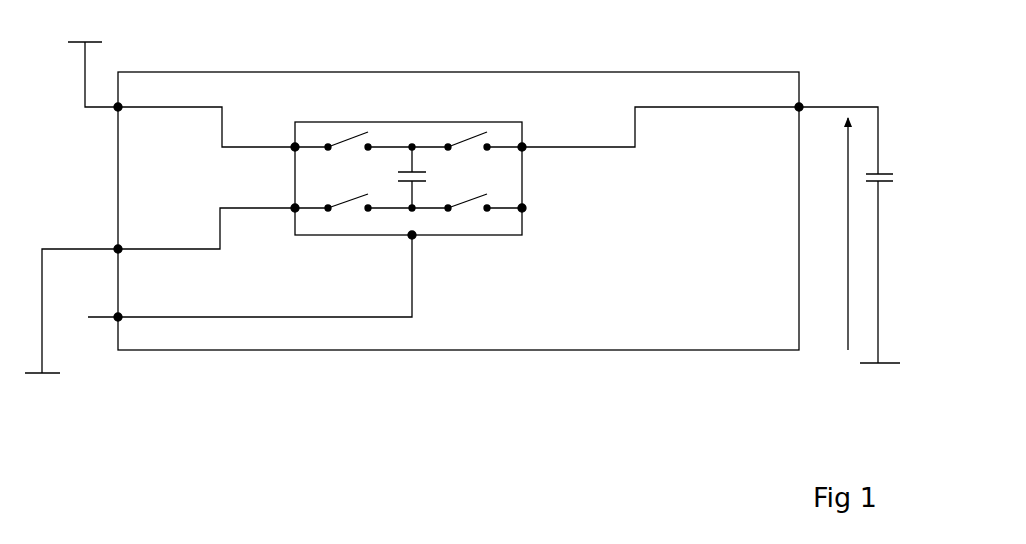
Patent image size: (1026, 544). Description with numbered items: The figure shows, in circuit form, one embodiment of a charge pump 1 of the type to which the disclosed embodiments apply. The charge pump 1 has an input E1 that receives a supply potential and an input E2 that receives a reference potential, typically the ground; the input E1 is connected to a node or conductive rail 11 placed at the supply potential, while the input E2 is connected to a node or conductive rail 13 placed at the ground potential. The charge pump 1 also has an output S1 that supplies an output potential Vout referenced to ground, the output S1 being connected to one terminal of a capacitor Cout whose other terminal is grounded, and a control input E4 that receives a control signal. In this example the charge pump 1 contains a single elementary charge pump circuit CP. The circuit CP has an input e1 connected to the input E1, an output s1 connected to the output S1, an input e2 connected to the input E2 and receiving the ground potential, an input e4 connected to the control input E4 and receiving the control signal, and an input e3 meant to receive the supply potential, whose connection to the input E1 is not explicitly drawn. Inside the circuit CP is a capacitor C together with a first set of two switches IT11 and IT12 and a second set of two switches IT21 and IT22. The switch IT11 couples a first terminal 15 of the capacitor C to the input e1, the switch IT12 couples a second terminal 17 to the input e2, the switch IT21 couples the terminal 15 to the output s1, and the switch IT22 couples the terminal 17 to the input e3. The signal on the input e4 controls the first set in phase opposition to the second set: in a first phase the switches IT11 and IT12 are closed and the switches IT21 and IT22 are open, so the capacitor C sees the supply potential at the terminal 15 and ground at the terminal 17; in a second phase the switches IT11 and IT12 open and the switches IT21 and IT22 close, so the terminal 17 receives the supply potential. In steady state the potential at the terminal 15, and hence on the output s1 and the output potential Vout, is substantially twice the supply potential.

The charge pump 1 is at (826, 17).
The conductive rail 11 is at (84, 45).
The conductive rail 13 is at (40, 372).
The first terminal of the capacitor 15 is at (413, 142).
The second terminal of the capacitor 17 is at (411, 211).
The elementary charge pump circuit CP is at (505, 240).
The capacitor C is at (407, 177).
The switch IT11 is at (348, 153).
The switch IT12 is at (348, 192).
The switch IT21 is at (467, 153).
The switch IT22 is at (467, 192).
The input E1 is at (206, 116).
The input E2 is at (204, 230).
The control input E4 is at (238, 278).
The output S1 is at (836, 128).
The output potential Vout is at (848, 182).
The capacitor Cout is at (895, 190).
The input e1 is at (293, 143).
The input e2 is at (292, 206).
The input e3 is at (526, 210).
The input e4 is at (415, 238).
The output s1 is at (526, 142).